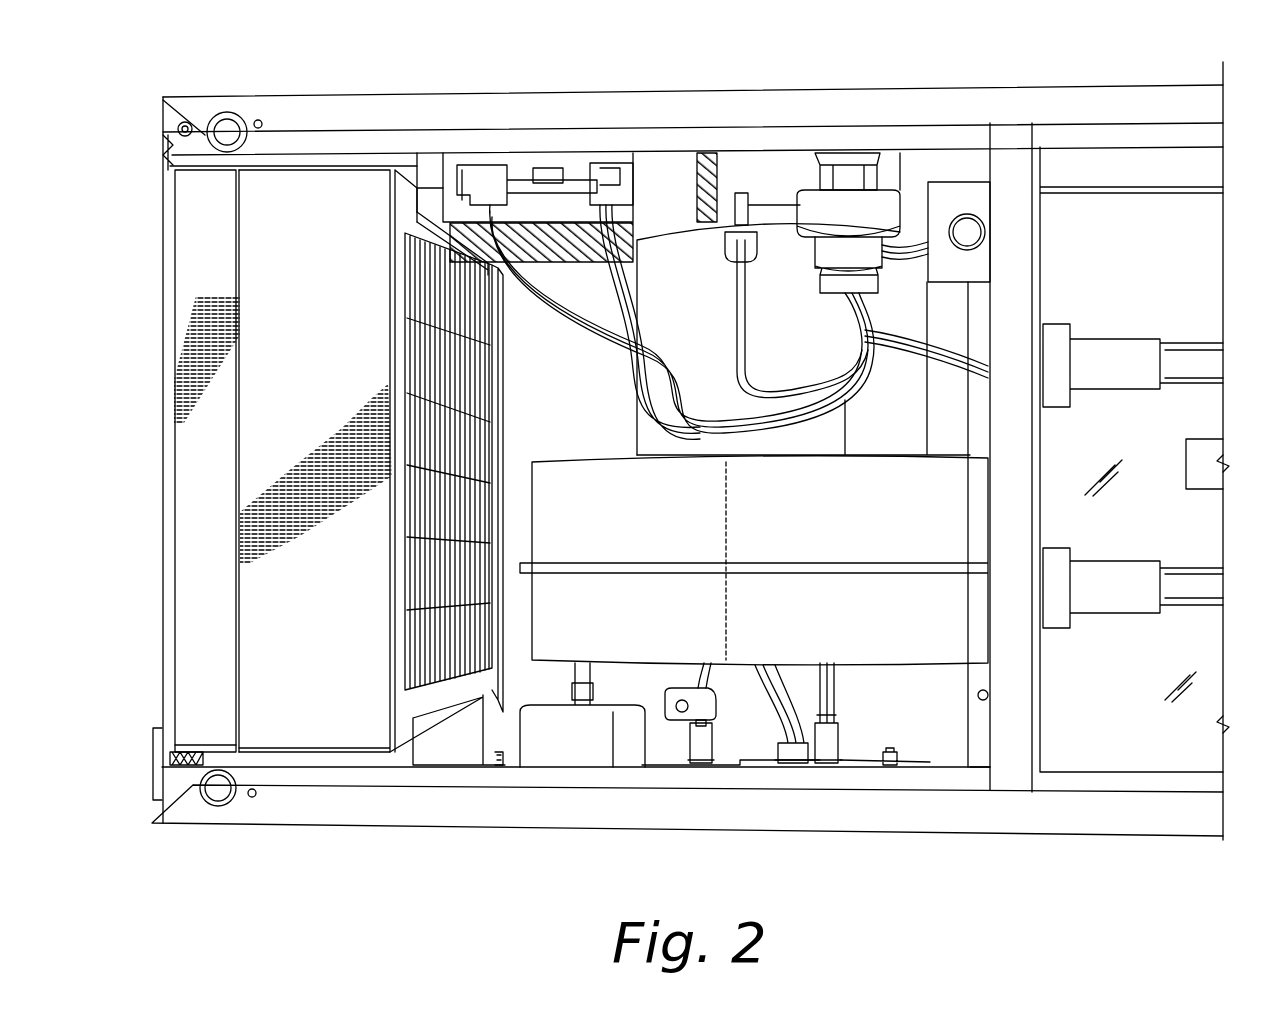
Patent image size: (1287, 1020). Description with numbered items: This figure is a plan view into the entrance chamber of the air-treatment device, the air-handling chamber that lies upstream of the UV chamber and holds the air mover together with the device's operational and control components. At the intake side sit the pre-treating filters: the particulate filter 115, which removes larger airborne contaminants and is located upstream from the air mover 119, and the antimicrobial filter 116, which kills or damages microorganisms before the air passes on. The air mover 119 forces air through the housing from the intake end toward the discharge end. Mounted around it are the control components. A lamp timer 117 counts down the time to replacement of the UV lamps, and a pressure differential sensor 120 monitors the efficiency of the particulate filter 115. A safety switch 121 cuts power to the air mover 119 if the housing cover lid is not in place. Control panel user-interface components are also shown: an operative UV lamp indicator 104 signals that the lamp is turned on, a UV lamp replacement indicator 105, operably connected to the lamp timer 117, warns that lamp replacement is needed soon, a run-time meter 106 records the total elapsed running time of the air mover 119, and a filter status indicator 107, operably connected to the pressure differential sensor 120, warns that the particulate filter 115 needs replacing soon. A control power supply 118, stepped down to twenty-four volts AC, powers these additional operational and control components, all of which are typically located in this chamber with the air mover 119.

The operative UV lamp indicator 104 is at (682, 743).
The UV lamp replacement indicator 105 is at (845, 735).
The run-time meter 106 is at (592, 736).
The filter status indicator 107 is at (765, 749).
The particulate filter 115 is at (206, 467).
The antimicrobial filter 116 is at (300, 579).
The lamp timer 117 is at (521, 170).
The control power supply 118 is at (716, 177).
The air mover 119 is at (580, 610).
The pressure differential sensor 120 is at (891, 184).
The safety switch 121 is at (960, 206).